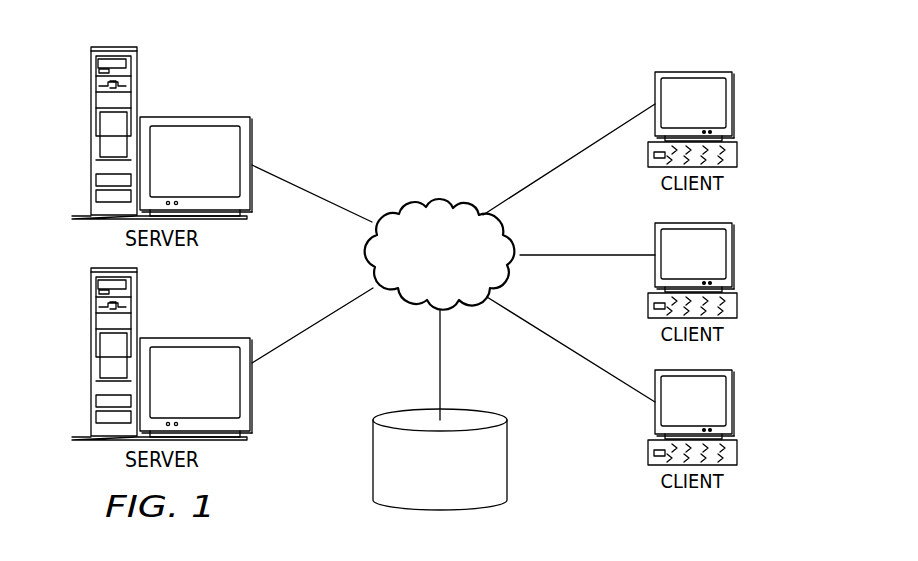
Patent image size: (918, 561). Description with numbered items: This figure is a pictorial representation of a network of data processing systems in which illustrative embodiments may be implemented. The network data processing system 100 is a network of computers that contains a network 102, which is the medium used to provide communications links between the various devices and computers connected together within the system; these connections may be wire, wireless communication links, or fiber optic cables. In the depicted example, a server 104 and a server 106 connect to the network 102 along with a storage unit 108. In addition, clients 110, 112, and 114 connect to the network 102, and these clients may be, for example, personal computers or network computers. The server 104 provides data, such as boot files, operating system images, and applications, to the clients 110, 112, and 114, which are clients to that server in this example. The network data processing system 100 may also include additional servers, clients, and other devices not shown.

The network data processing system 100 is at (301, 62).
The network 102 is at (407, 201).
The server 104 is at (91, 131).
The server 106 is at (92, 357).
The storage unit 108 is at (405, 408).
The client 110 is at (733, 104).
The client 112 is at (735, 255).
The client 114 is at (735, 405).